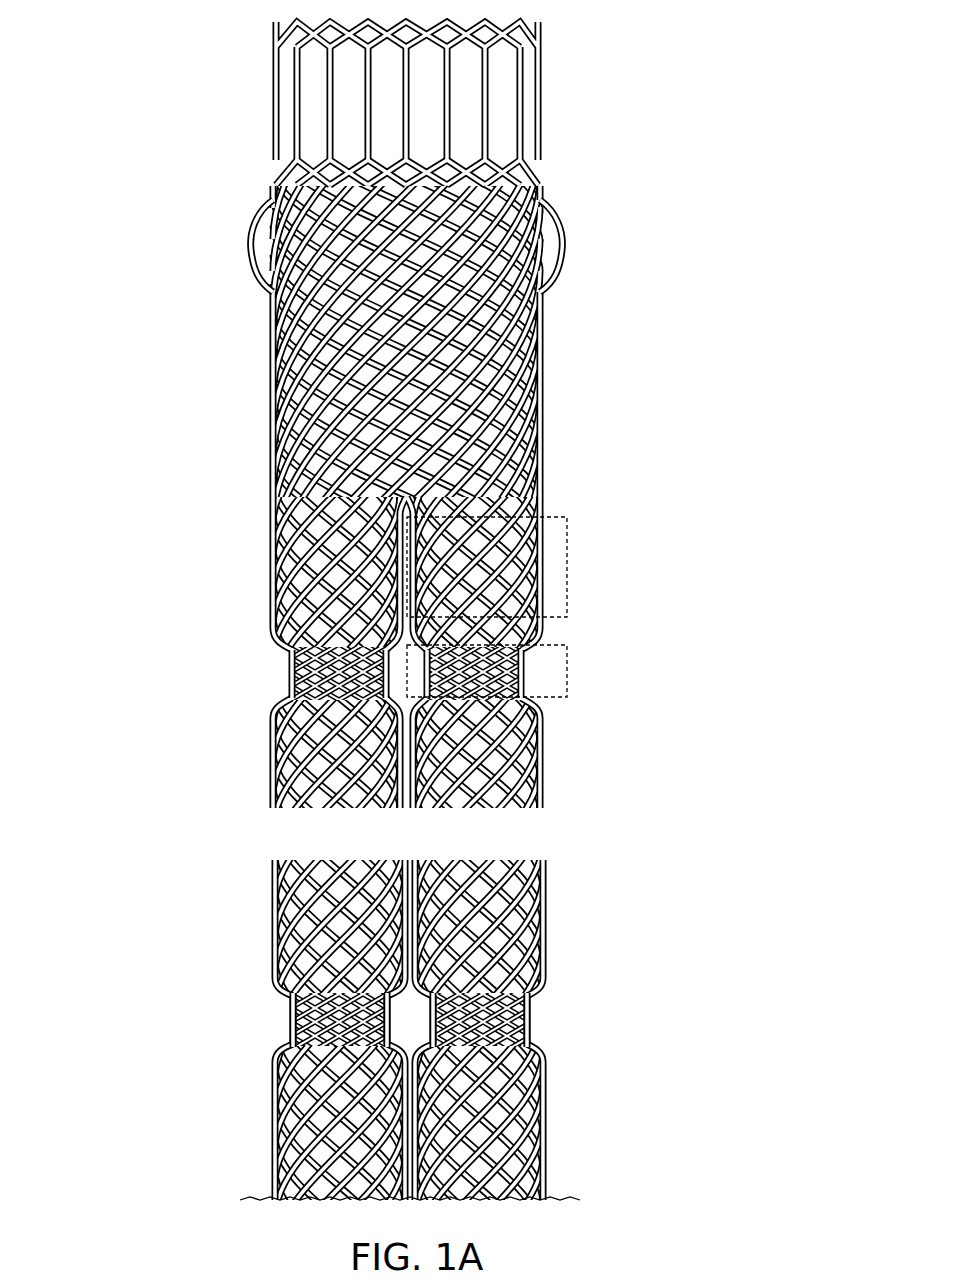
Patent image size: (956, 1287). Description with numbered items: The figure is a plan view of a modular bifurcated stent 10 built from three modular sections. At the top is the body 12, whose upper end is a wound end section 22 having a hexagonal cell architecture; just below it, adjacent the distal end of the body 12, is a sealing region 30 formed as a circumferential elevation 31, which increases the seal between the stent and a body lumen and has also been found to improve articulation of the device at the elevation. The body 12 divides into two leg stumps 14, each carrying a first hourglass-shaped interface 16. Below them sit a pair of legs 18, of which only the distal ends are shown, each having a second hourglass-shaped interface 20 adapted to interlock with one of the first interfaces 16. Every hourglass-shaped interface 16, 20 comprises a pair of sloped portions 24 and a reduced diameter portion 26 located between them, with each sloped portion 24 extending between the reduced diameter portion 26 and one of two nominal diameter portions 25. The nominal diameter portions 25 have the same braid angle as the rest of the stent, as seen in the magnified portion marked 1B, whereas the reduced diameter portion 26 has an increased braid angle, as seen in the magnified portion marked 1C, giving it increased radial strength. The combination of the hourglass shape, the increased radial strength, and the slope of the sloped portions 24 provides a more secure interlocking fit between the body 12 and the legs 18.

The modular bifurcated stent 10 is at (343, 643).
The body 12 is at (415, 451).
The leg stumps 14 is at (275, 770).
The first hourglass-shaped interfaces 16 is at (393, 859).
The legs 18 is at (275, 932).
The second hourglass-shaped interface 20 is at (257, 1013).
The wound end section 22 is at (542, 95).
The sloped portions 24 is at (288, 703).
The nominal diameter portions 25 is at (273, 515).
The reduced diameter portion 26 is at (292, 672).
The sealing region 30 is at (240, 214).
The circumferential elevation 31 is at (562, 232).
The detail view 1B is at (567, 517).
The detail view 1C is at (567, 645).